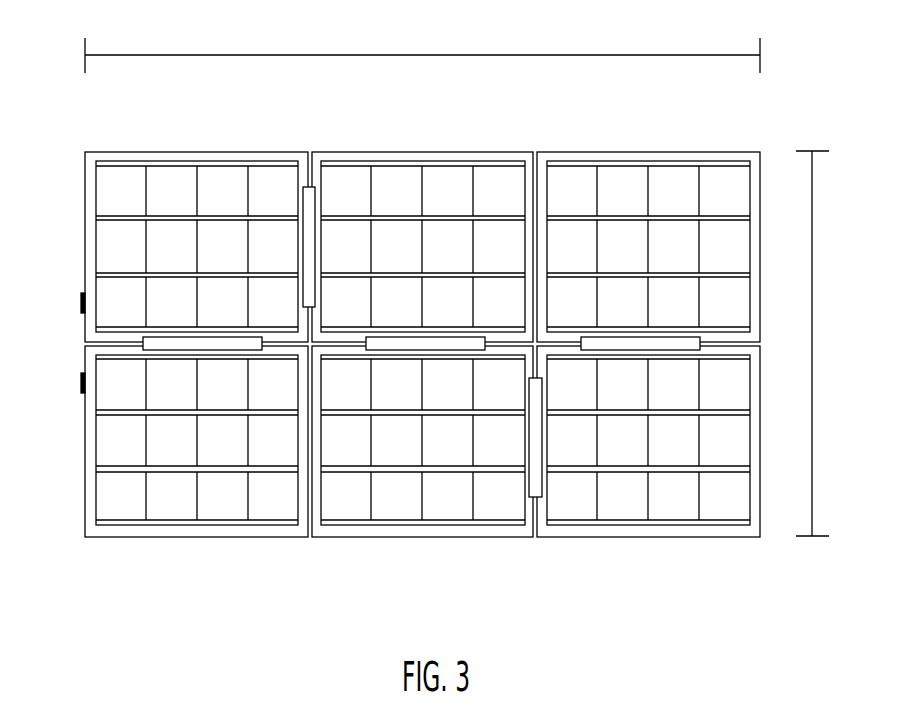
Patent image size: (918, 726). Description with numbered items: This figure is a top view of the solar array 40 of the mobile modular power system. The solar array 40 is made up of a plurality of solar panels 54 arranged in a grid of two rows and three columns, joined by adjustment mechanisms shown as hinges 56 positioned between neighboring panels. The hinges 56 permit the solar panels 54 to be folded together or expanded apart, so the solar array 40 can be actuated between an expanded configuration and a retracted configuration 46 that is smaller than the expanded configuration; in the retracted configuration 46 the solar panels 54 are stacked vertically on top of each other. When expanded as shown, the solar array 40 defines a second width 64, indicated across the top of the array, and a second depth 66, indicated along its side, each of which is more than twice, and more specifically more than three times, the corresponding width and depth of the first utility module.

The solar array 40 is at (397, 346).
The retracted configuration 46 is at (798, 123).
The solar panels 54 is at (258, 151).
The hinges 56 is at (292, 258).
The second width 64 is at (231, 50).
The second depth 66 is at (819, 343).